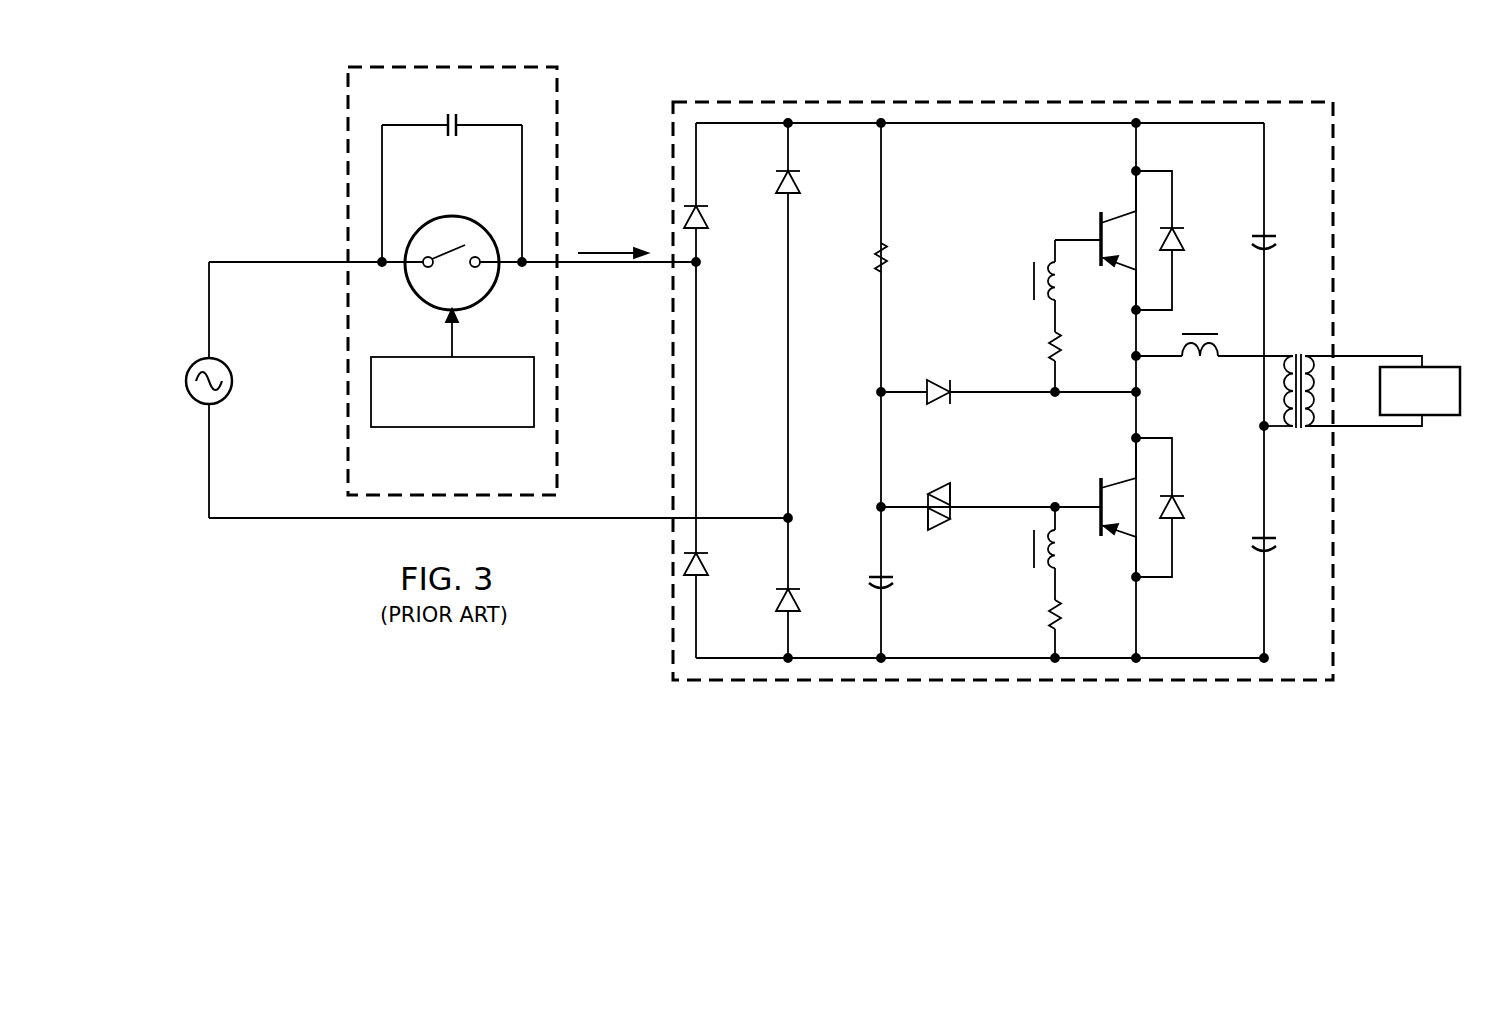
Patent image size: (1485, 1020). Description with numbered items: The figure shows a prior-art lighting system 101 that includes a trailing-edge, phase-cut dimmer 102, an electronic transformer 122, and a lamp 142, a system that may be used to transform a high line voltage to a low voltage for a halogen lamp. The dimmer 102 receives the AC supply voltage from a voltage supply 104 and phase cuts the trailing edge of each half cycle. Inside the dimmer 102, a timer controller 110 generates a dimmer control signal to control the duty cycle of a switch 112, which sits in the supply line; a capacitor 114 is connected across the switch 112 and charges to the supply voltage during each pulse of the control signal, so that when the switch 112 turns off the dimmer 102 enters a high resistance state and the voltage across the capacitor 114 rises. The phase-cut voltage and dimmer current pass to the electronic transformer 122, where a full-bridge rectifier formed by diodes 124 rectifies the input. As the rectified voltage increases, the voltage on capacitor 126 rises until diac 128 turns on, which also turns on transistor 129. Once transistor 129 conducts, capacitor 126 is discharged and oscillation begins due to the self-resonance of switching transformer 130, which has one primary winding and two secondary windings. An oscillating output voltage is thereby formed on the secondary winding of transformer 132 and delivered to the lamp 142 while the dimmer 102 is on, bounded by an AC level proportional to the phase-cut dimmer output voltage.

The lighting system 101 is at (227, 144).
The trailing-edge, phase-cut dimmer 102 is at (338, 211).
The voltage supply 104 is at (187, 378).
The timer controller 110 is at (440, 428).
The switch 112 is at (440, 219).
The capacitor 114 is at (455, 136).
The electronic transformer 122 is at (1338, 282).
The diodes 124 is at (709, 214).
The capacitor 126 is at (895, 583).
The diac 128 is at (940, 530).
The transistor 129 is at (1096, 495).
The switching transformer 130 is at (1053, 261).
The transformer 132 is at (1297, 430).
The lamp 142 is at (1432, 416).